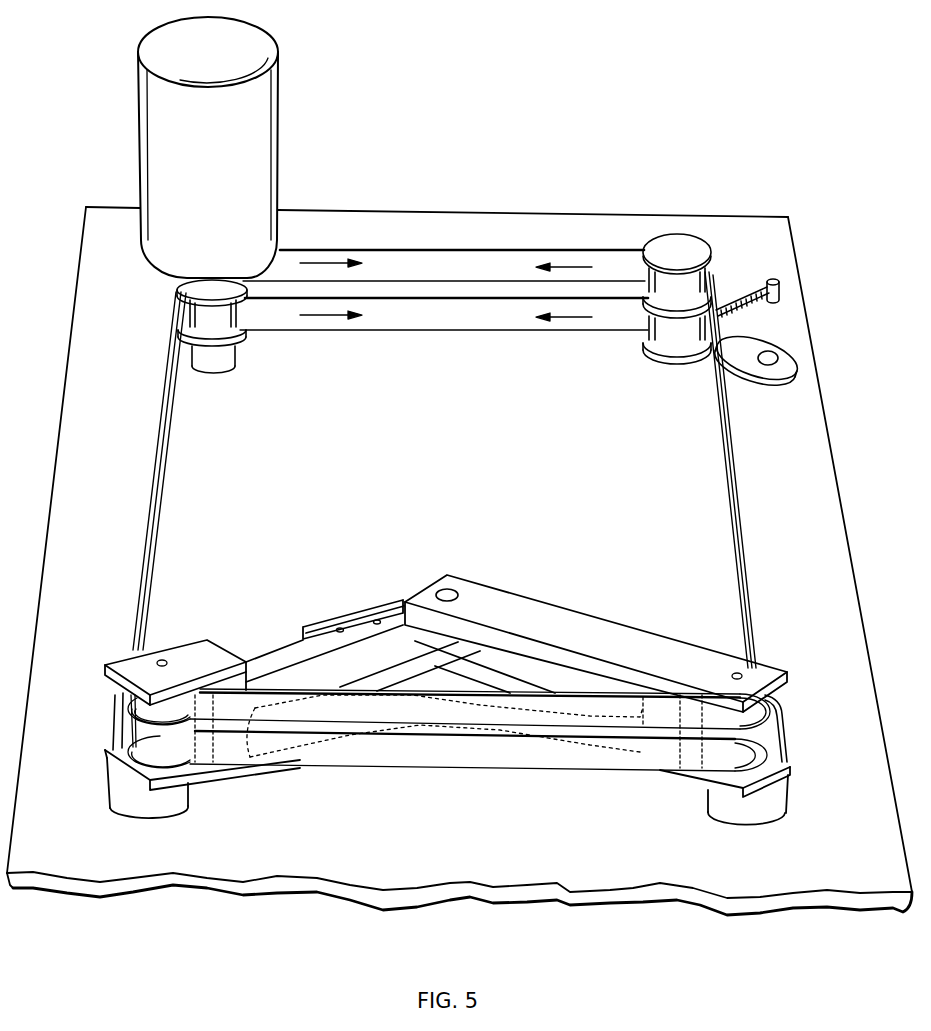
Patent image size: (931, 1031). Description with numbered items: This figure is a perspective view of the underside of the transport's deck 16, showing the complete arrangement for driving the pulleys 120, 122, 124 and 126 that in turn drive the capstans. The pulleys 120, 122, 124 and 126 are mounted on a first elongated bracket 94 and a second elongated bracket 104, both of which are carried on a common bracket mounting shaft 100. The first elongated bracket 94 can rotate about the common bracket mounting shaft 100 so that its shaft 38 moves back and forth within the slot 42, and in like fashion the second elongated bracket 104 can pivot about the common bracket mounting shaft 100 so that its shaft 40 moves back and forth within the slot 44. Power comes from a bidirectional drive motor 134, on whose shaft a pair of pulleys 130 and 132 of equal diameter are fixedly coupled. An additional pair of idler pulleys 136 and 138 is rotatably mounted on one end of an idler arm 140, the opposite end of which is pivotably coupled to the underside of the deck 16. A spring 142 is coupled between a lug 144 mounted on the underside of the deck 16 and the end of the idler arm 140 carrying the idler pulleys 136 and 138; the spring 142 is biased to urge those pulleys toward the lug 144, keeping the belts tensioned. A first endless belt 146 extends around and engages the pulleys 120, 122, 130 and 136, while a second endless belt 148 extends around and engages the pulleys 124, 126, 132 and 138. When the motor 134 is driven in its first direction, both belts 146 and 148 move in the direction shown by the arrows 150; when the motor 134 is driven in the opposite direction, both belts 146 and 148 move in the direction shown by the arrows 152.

The deck 16 is at (853, 578).
The drive motor 134 is at (259, 108).
The pulley 132 is at (190, 288).
The pulley 130 is at (246, 336).
The idler pulley 138 is at (678, 282).
The idler pulley 136 is at (678, 338).
The idler arm 140 is at (743, 352).
The spring 142 is at (730, 304).
The lug 144 is at (778, 285).
The second endless belt 148 is at (422, 262).
The first endless belt 146 is at (462, 320).
The arrows 150 is at (567, 268).
The arrows 152 is at (320, 267).
The first elongated bracket 94 is at (598, 633).
The second elongated bracket 104 is at (274, 662).
The common bracket mounting shaft 100 is at (455, 595).
The shaft 38 is at (742, 675).
The shaft 40 is at (162, 660).
The pulley 126 is at (117, 694).
The pulley 122 is at (114, 733).
The pulley 124 is at (775, 706).
The pulley 120 is at (790, 752).
The slot 42 is at (788, 788).
The slot 44 is at (110, 785).